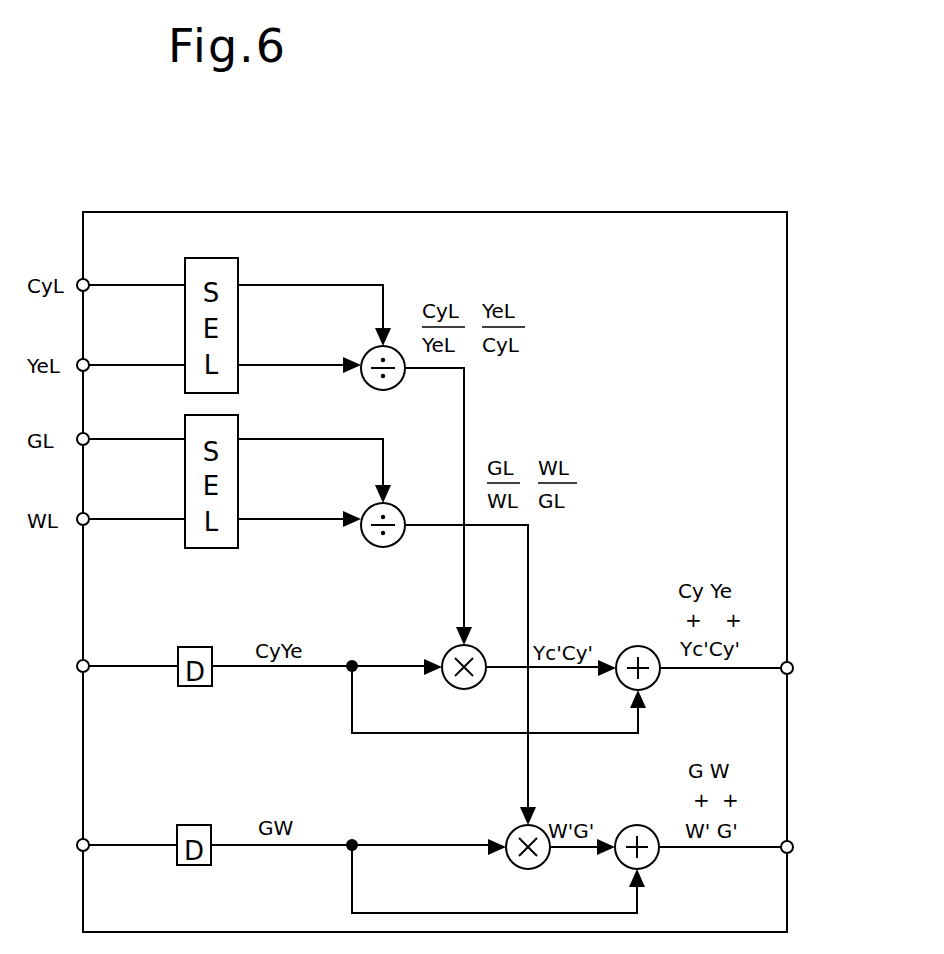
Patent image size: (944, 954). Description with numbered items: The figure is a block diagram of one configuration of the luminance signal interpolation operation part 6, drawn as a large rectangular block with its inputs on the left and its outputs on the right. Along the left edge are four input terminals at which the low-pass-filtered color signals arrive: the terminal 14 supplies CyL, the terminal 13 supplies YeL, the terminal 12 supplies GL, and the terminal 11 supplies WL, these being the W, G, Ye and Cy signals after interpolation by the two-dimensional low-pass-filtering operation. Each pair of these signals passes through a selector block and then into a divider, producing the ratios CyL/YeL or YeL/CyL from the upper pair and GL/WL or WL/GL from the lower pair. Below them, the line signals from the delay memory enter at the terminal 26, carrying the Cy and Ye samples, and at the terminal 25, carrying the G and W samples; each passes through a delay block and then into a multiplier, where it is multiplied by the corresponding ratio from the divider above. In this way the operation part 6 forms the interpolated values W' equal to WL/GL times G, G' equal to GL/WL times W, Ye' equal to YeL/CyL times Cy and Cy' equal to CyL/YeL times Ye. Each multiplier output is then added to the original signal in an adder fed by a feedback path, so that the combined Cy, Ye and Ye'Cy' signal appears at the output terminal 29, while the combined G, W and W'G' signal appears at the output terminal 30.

The luminance signal interpolation operation part 6 is at (383, 212).
The terminal 14 is at (88, 280).
The terminal 13 is at (88, 360).
The terminal 12 is at (88, 434).
The terminal 11 is at (88, 514).
The terminal 26 is at (88, 661).
The terminal 25 is at (88, 840).
The output terminal 29 is at (792, 663).
The output terminal 30 is at (792, 842).